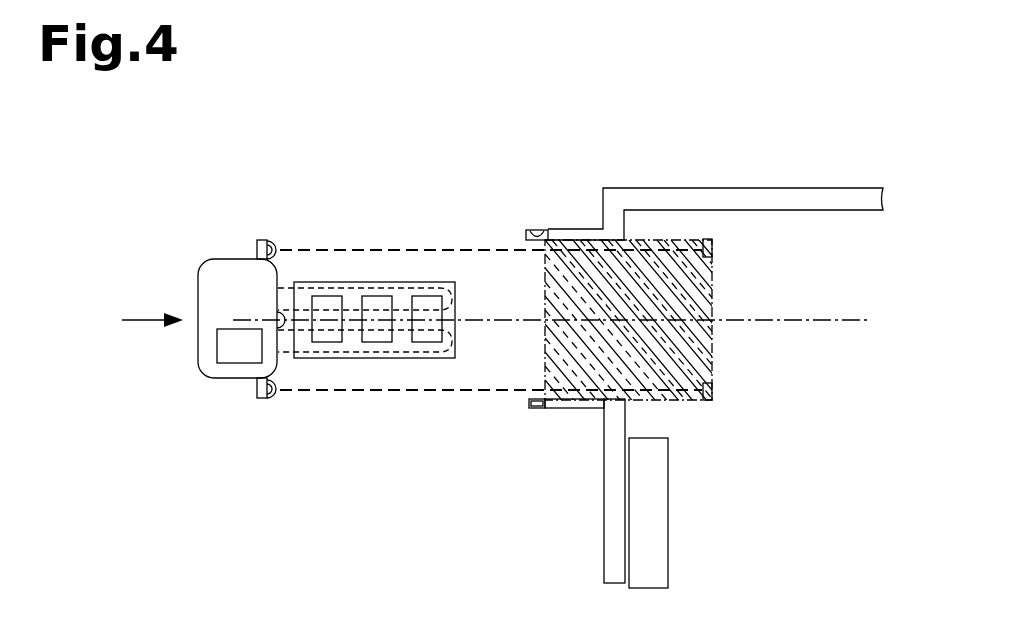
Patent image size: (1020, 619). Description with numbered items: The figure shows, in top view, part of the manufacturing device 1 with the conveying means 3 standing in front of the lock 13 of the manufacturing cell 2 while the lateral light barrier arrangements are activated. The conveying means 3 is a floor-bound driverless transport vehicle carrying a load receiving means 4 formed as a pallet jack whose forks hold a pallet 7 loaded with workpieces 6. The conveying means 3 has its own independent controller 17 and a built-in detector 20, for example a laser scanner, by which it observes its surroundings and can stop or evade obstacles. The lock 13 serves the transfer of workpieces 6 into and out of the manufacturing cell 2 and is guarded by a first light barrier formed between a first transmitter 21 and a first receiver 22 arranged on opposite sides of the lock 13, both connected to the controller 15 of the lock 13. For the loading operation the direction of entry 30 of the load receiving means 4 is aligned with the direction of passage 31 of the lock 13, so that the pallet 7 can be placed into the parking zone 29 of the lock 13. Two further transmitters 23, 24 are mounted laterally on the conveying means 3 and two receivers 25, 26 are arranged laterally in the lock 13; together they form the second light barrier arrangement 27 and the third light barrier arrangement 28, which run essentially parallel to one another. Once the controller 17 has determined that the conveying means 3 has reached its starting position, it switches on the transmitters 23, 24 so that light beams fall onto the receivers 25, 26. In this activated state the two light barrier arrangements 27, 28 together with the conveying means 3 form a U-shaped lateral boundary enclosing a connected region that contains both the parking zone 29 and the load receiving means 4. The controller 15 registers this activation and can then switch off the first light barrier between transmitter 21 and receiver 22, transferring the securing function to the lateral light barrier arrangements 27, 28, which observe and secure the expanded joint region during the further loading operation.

The manufacturing device 1 is at (280, 82).
The manufacturing cell 2 is at (805, 162).
The conveying means 3 is at (158, 407).
The load receiving means 4 is at (355, 408).
The workpieces 6 is at (423, 323).
The pallet 7 is at (323, 357).
The lock 13 is at (542, 452).
The controller of the lock 15 is at (683, 523).
The controller of the conveying means 17 is at (228, 347).
The detector 20 is at (278, 320).
The first transmitter 21 is at (530, 230).
The first receiver 22 is at (533, 412).
The transmitter 23 is at (243, 240).
The transmitter 24 is at (263, 412).
The receiver 25 is at (722, 245).
The receiver 26 is at (720, 395).
The second light barrier arrangement 27 is at (438, 242).
The third light barrier arrangement 28 is at (398, 397).
The parking zone 29 is at (575, 412).
The direction of entry 30 is at (402, 318).
The direction of passage 31 is at (652, 322).